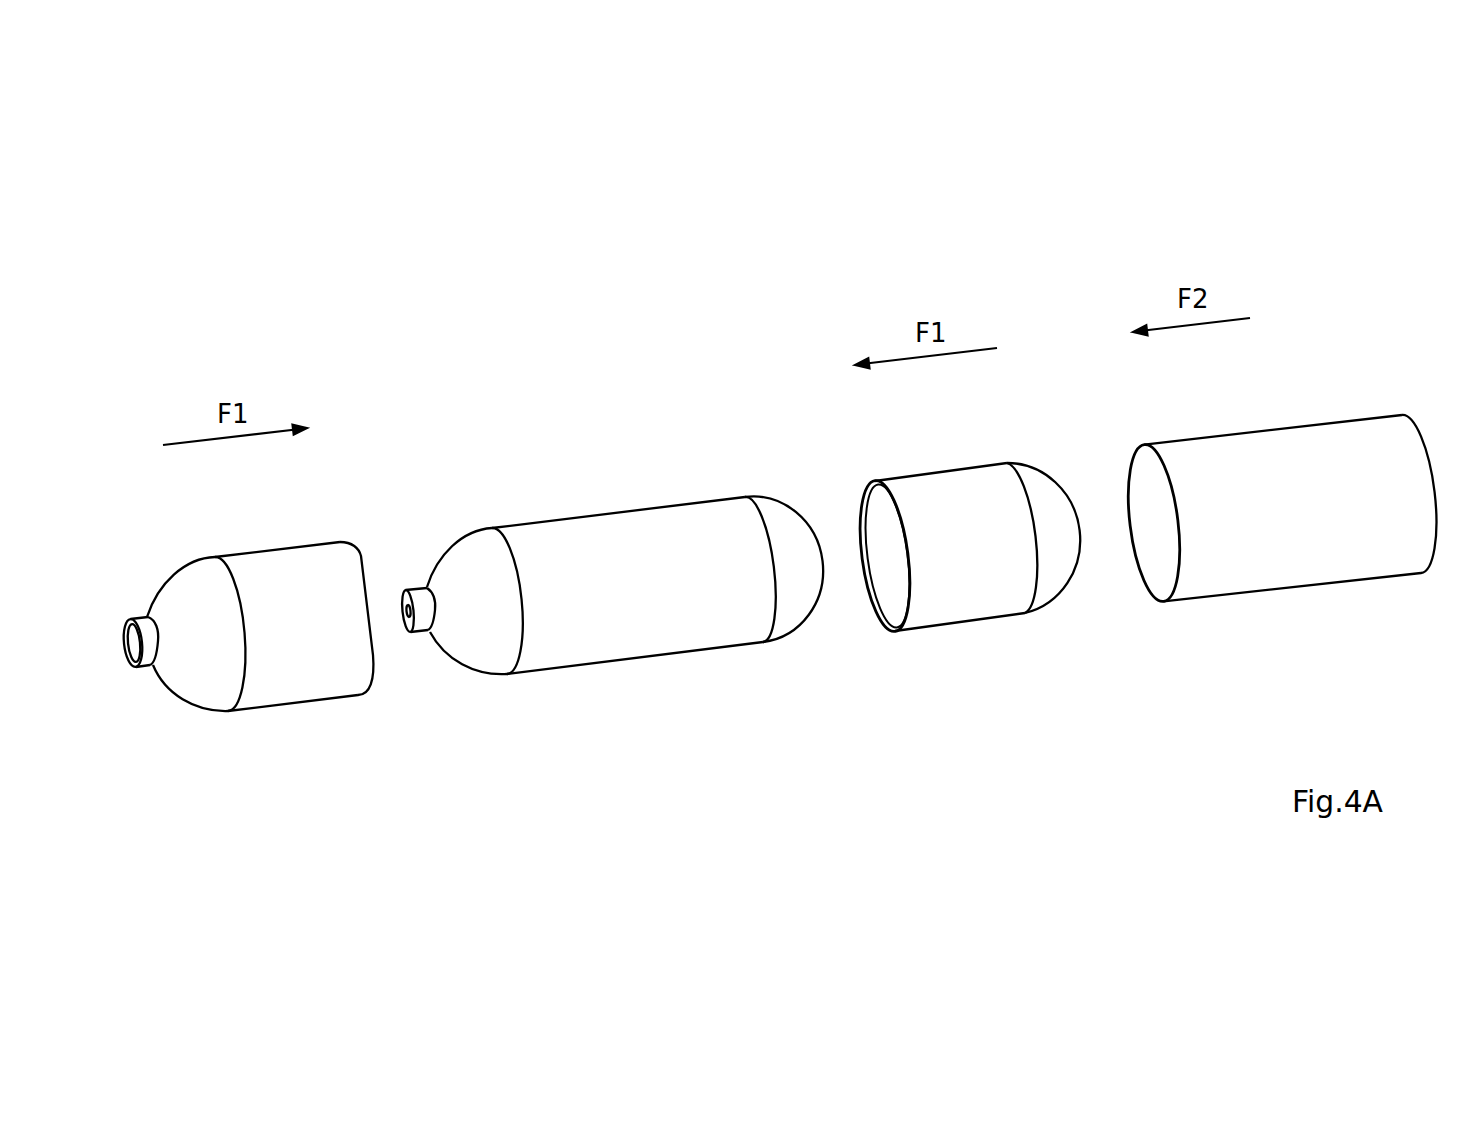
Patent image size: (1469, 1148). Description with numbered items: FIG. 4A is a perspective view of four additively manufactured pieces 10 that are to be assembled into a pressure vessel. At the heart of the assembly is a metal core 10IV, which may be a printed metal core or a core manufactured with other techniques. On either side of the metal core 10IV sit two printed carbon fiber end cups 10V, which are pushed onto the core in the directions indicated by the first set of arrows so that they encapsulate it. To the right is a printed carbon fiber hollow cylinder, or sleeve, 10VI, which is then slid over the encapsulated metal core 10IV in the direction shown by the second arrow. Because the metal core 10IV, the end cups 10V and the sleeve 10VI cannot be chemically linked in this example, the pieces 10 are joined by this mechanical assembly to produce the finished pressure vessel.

The additively manufactured pieces 10 is at (1381, 259).
The metal core 10IV is at (632, 537).
The printed carbon fiber end cups 10V is at (285, 575).
The printed carbon fiber hollow cylinder (sleeve) 10VI is at (1285, 453).